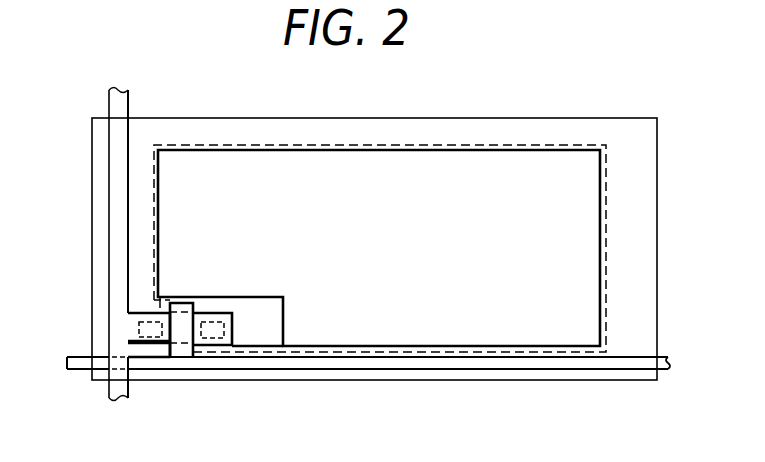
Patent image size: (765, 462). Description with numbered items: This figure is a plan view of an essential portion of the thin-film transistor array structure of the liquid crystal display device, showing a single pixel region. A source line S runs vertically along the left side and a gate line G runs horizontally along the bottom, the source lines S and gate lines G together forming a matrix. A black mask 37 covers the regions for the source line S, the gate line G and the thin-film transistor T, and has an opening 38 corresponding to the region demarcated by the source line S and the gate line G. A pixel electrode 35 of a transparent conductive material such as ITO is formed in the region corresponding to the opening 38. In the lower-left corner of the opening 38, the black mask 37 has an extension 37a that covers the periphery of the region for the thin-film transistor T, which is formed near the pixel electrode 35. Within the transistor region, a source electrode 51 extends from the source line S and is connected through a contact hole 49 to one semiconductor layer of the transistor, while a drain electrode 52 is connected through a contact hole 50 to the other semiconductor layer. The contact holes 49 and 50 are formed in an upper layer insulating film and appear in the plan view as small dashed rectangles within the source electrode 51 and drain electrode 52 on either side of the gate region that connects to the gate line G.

The pixel electrode 35 is at (205, 146).
The black mask 37 is at (640, 240).
The extension 37a is at (162, 308).
The opening 38 is at (548, 160).
The contact hole 49 is at (182, 368).
The contact hole 50 is at (255, 370).
The source electrode 51 is at (118, 327).
The drain electrode 52 is at (212, 380).
The gate line G is at (340, 368).
The source line S is at (118, 188).
The thin-film transistor T is at (215, 308).